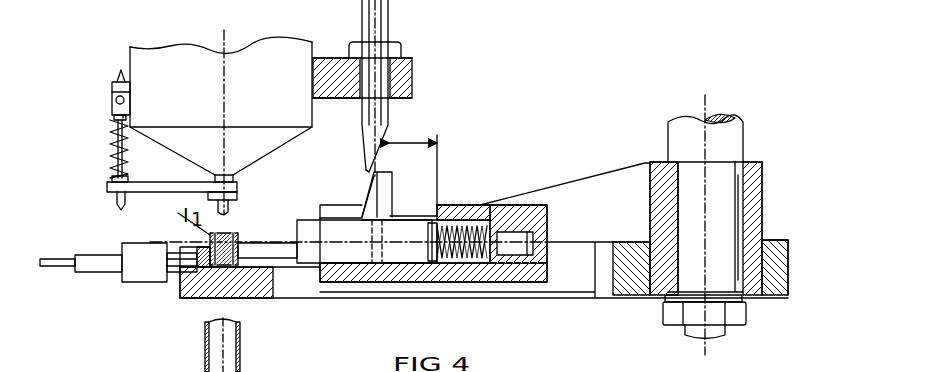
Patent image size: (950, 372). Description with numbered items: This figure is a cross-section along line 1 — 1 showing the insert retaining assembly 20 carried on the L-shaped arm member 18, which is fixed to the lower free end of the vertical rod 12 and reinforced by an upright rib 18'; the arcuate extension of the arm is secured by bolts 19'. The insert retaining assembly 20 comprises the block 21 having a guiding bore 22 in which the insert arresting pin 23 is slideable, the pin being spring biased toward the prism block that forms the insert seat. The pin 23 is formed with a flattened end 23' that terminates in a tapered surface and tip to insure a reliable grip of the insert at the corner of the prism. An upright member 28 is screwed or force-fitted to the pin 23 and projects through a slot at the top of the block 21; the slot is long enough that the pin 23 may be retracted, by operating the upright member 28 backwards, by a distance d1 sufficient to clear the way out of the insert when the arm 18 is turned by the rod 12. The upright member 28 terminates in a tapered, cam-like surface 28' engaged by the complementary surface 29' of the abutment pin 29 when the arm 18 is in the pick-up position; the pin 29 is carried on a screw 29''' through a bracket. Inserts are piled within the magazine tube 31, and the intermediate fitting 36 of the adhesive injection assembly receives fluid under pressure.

The section line 1 is at (162, 67).
The vertical rod 12 is at (733, 133).
The L-shaped arm member 18 is at (723, 228).
The upright rib 18' is at (565, 172).
The bolts 19' is at (192, 244).
The insert retaining assembly 20 is at (462, 200).
The block 21 is at (397, 216).
The guiding bore 22 is at (460, 270).
The insert arresting pin 23 is at (355, 226).
The flattened end 23' is at (267, 236).
The upright member 28 is at (345, 184).
The tapered cam-like surface 28' is at (351, 183).
The abutment pin 29 is at (353, 88).
The complementary surface 29' is at (397, 160).
The adjusting screw 29''' is at (402, 29).
The magazine tube 31 is at (207, 343).
The intermediate fitting 36 is at (128, 273).
The retraction distance d1 is at (413, 168).